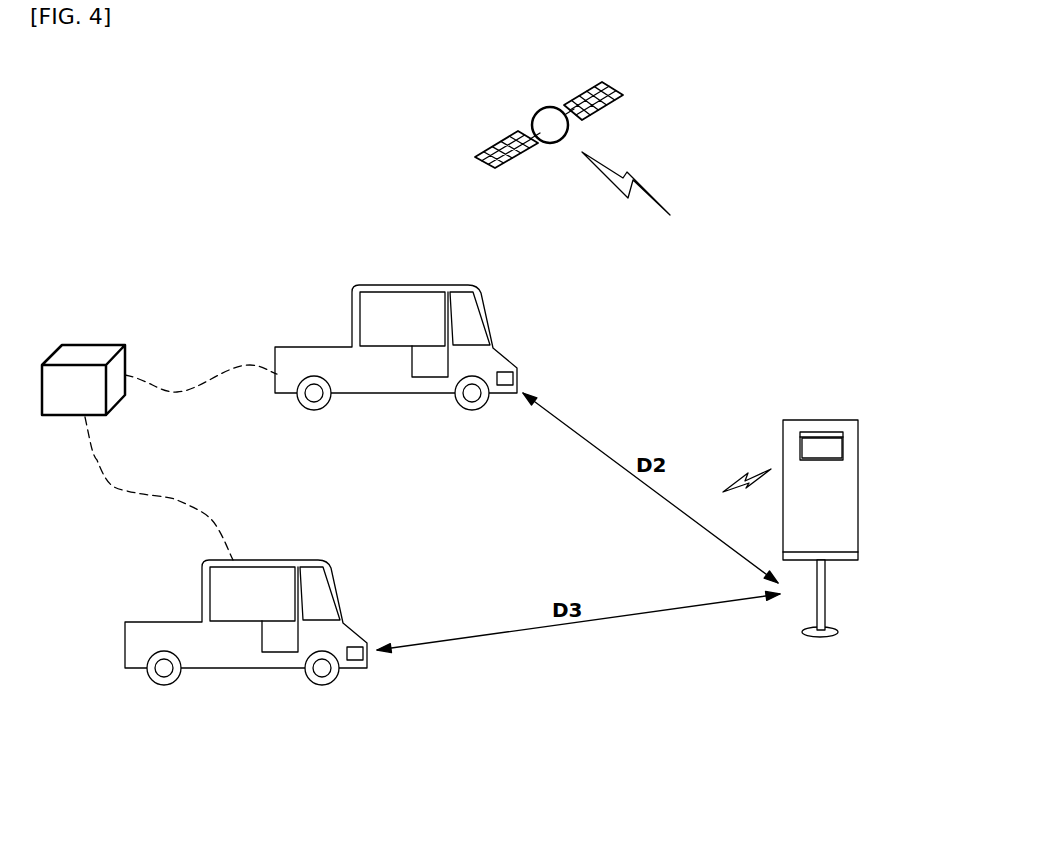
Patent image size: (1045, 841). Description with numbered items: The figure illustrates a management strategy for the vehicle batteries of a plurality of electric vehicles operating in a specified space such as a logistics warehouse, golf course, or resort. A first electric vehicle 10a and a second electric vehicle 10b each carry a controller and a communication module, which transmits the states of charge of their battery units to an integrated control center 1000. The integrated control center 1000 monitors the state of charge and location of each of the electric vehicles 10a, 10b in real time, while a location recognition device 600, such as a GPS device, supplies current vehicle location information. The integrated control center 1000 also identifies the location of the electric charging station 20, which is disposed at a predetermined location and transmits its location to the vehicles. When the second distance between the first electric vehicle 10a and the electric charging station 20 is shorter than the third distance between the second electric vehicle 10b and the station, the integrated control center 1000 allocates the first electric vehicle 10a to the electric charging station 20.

The location recognition device 600 is at (538, 118).
The integrated control center 1000 is at (88, 345).
The first electric vehicle 10a is at (432, 380).
The second electric vehicle 10b is at (273, 637).
The electric charging station 20 is at (858, 493).